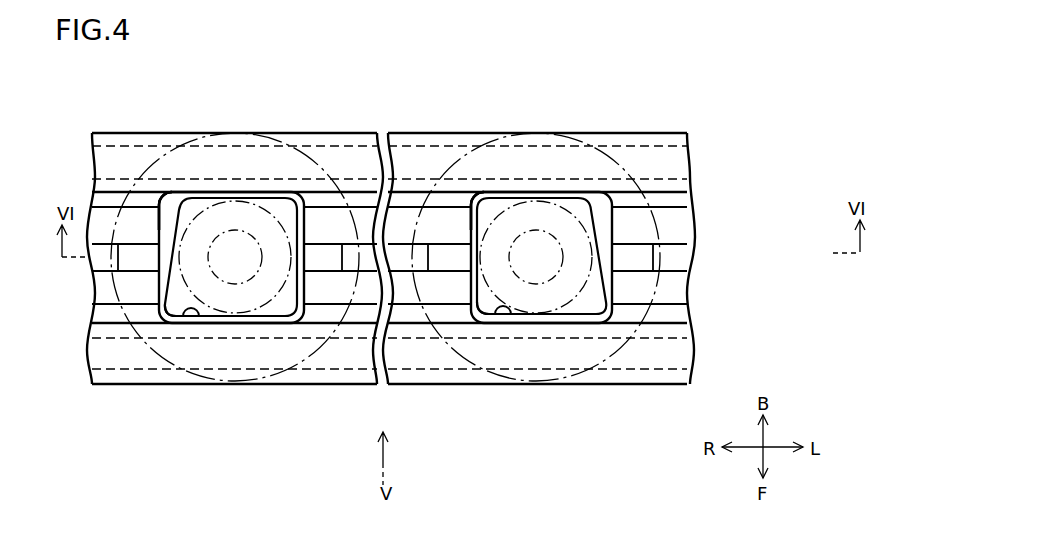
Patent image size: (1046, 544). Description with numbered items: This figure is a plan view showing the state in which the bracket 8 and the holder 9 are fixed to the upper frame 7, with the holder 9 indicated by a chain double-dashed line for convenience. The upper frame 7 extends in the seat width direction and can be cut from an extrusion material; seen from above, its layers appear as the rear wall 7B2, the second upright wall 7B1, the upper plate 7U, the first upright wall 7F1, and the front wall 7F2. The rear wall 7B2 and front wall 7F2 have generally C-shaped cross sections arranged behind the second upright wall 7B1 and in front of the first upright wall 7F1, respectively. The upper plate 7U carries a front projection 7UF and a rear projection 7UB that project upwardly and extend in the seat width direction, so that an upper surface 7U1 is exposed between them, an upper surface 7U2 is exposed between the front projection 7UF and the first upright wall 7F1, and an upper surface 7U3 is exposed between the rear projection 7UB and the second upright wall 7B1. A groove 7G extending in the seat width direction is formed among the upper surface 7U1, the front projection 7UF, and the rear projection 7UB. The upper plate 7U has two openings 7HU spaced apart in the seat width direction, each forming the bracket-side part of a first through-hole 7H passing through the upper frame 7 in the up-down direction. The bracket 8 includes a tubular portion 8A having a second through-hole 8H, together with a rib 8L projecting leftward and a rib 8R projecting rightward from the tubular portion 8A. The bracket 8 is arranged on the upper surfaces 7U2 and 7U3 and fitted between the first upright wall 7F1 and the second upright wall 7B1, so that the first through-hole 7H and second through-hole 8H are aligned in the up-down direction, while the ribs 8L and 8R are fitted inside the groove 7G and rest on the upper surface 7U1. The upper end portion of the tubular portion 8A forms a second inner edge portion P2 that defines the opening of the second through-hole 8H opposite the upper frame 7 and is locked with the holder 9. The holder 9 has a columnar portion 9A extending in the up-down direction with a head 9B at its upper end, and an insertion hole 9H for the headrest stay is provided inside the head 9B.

The upper frame 7 is at (139, 131).
The first through-hole 7H is at (159, 222).
The opening 7HU is at (335, 155).
The rear wall 7B2 is at (687, 135).
The second upright wall 7B1 is at (687, 181).
The upper plate 7U is at (784, 193).
The upper surface 7U3 is at (679, 200).
The rear projection 7UB is at (680, 226).
The upper surface 7U1 is at (679, 255).
The front projection 7UF is at (680, 284).
The upper surface 7U2 is at (679, 308).
The first upright wall 7F1 is at (687, 330).
The front wall 7F2 is at (687, 372).
The groove 7G is at (402, 262).
The bracket 8 is at (260, 325).
The rib 8R is at (133, 260).
The rib 8L is at (328, 260).
The second through-hole 8H is at (184, 318).
The tubular portion 8A is at (218, 318).
The second inner edge portion P2 is at (355, 383).
The holder 9 is at (363, 83).
The insertion hole 9H is at (260, 243).
The columnar portion 9A is at (283, 233).
The head 9B is at (345, 170).